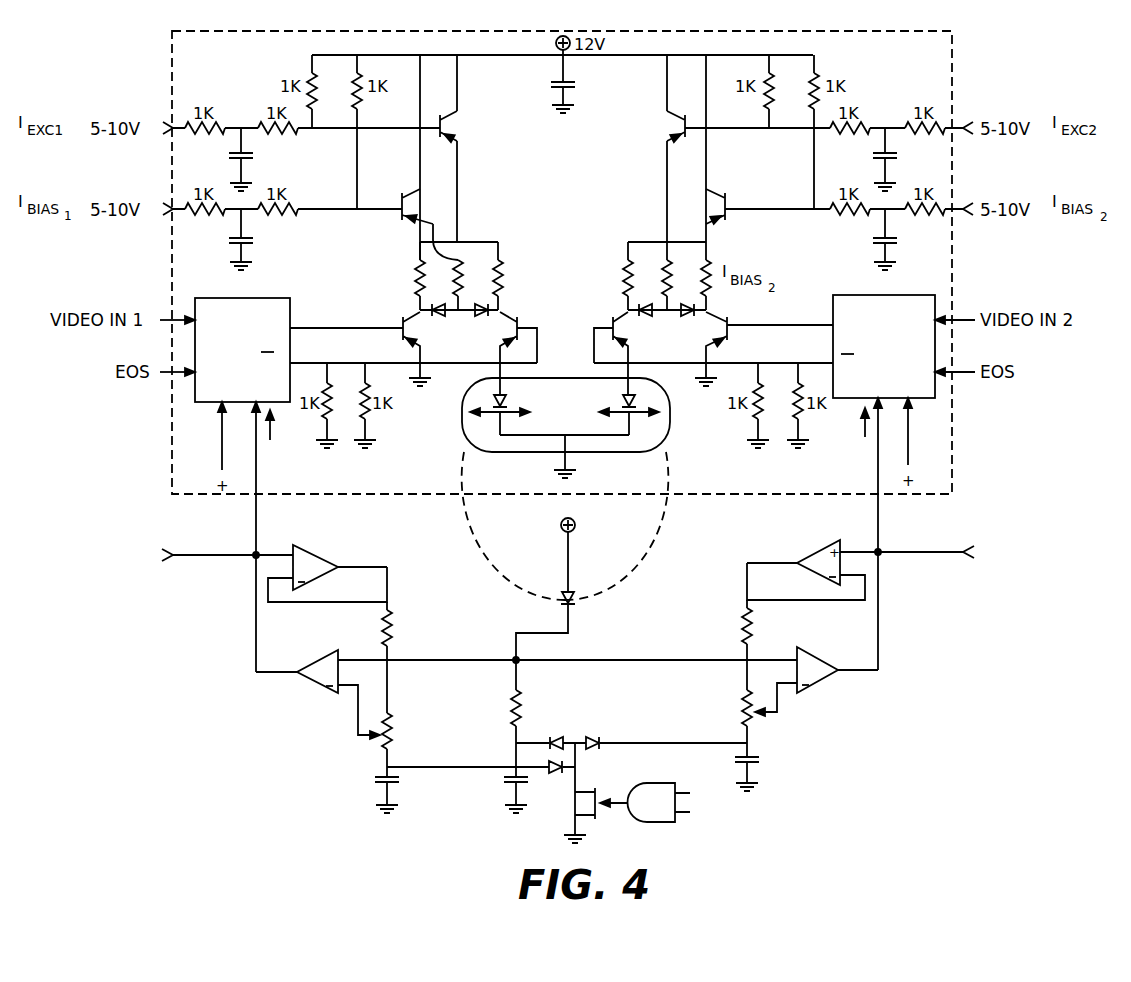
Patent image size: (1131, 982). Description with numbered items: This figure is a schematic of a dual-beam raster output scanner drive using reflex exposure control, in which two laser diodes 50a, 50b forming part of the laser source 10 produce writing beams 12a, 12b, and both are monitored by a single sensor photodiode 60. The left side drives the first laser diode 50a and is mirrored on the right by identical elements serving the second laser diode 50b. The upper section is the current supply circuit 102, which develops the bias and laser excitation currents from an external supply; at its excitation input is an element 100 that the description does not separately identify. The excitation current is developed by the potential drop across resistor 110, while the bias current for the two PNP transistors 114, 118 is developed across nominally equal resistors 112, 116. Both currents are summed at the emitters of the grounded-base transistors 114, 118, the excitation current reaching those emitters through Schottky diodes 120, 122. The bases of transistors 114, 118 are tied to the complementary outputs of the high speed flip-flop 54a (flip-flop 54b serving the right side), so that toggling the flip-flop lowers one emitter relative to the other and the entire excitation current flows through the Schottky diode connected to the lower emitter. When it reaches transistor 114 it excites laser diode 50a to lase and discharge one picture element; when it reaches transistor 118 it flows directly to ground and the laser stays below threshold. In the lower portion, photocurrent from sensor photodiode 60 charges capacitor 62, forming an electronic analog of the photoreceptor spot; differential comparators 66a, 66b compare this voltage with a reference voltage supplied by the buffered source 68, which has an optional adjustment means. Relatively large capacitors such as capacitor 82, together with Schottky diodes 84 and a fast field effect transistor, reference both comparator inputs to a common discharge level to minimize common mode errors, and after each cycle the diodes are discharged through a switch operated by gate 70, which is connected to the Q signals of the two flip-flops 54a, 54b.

The laser source 10 is at (172, 443).
The writing beam 12a is at (467, 522).
The writing beam 12b is at (665, 522).
The first laser diode 50a is at (478, 379).
The second laser diode 50b is at (652, 379).
The flip-flop 54a is at (264, 298).
The flip-flop 54b is at (846, 295).
The sensor photodiode 60 is at (584, 606).
The capacitor 62 is at (512, 776).
The differential comparator 66a is at (308, 668).
The differential comparator 66b is at (826, 668).
The reference voltage source 68 is at (389, 573).
The OR gate 70 is at (657, 783).
The capacitor 82 is at (384, 768).
The Schottky diodes 84 is at (594, 740).
The input resistor 100 is at (206, 90).
The current supply circuits 102 is at (452, 118).
The resistor 110 is at (434, 234).
The resistor 112 is at (505, 270).
The transistor 114 is at (400, 320).
The resistor 116 is at (415, 283).
The transistor 118 is at (522, 320).
The Schottky diode 120 is at (492, 308).
The Schottky diode 122 is at (444, 318).